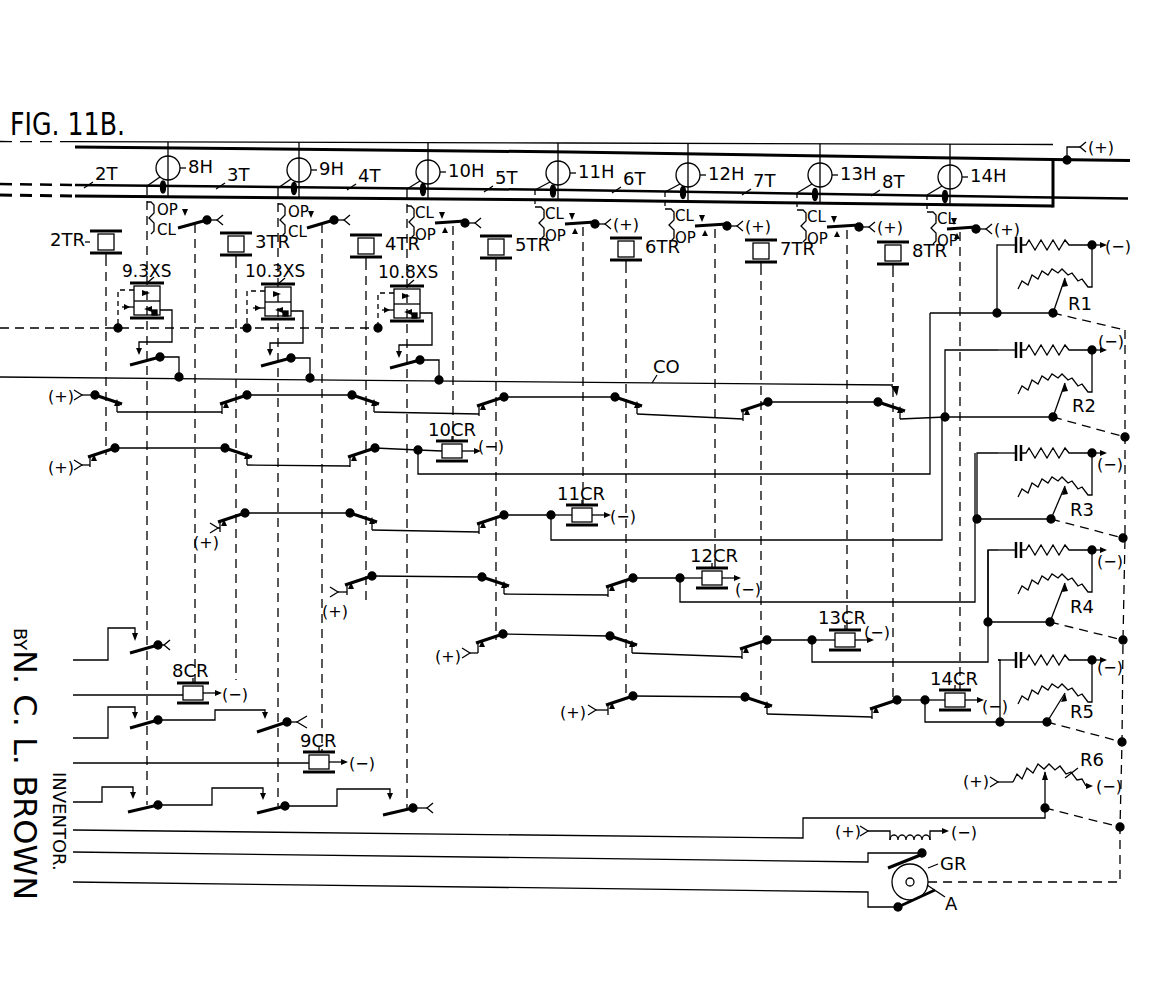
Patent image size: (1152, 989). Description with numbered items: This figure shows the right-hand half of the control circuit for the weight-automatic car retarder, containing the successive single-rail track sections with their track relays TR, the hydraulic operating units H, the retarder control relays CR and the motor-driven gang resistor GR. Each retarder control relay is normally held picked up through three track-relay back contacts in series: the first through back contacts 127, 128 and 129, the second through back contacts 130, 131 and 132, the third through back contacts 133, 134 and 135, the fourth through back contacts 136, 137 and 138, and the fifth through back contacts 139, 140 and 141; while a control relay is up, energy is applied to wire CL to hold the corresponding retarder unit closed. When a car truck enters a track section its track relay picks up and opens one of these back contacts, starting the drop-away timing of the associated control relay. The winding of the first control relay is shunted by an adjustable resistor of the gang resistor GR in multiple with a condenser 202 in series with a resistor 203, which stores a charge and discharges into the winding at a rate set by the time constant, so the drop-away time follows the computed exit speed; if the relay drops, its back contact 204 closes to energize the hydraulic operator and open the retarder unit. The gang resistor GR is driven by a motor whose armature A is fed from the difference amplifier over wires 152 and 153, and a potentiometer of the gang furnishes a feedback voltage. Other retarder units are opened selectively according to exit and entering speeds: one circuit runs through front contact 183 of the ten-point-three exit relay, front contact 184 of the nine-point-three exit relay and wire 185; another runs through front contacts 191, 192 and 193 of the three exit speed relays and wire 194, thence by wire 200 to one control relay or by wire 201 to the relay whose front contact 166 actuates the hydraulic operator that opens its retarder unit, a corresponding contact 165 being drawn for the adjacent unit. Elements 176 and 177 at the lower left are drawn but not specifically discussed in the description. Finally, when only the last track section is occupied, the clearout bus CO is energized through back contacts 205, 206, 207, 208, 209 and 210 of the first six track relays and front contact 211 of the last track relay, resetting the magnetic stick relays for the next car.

The back contact 127 is at (114, 463).
The back contact 128 is at (234, 455).
The back contact 129 is at (374, 464).
The back contact 130 is at (229, 518).
The back contact 131 is at (360, 521).
The back contact 132 is at (500, 527).
The back contact 133 is at (372, 592).
The back contact 134 is at (489, 585).
The back contact 135 is at (626, 586).
The back contact 136 is at (502, 650).
The back contact 137 is at (616, 645).
The back contact 138 is at (760, 648).
The back contact 139 is at (630, 711).
The back contact 140 is at (752, 706).
The back contact 141 is at (890, 708).
The wire 152 is at (127, 854).
The wire 153 is at (127, 884).
The switch contact 165 is at (214, 213).
The front contact 166 is at (342, 213).
The back contact 204 is at (456, 228).
The contact 176 is at (147, 644).
The conductor 177 is at (88, 659).
The front contact 183 is at (265, 724).
The front contact 184 is at (159, 733).
The wire 185 is at (82, 732).
The front contact 191 is at (422, 816).
The front contact 192 is at (291, 817).
The front contact 193 is at (160, 815).
The wire 194 is at (82, 802).
The wire 200 is at (89, 686).
The wire 201 is at (88, 758).
The condenser 202 is at (1052, 251).
The resistor 203 is at (1058, 245).
The back contact 205 is at (104, 400).
The back contact 206 is at (240, 401).
The back contact 207 is at (358, 403).
The back contact 208 is at (495, 401).
The back contact 209 is at (620, 405).
The back contact 210 is at (760, 406).
The front contact 211 is at (887, 409).